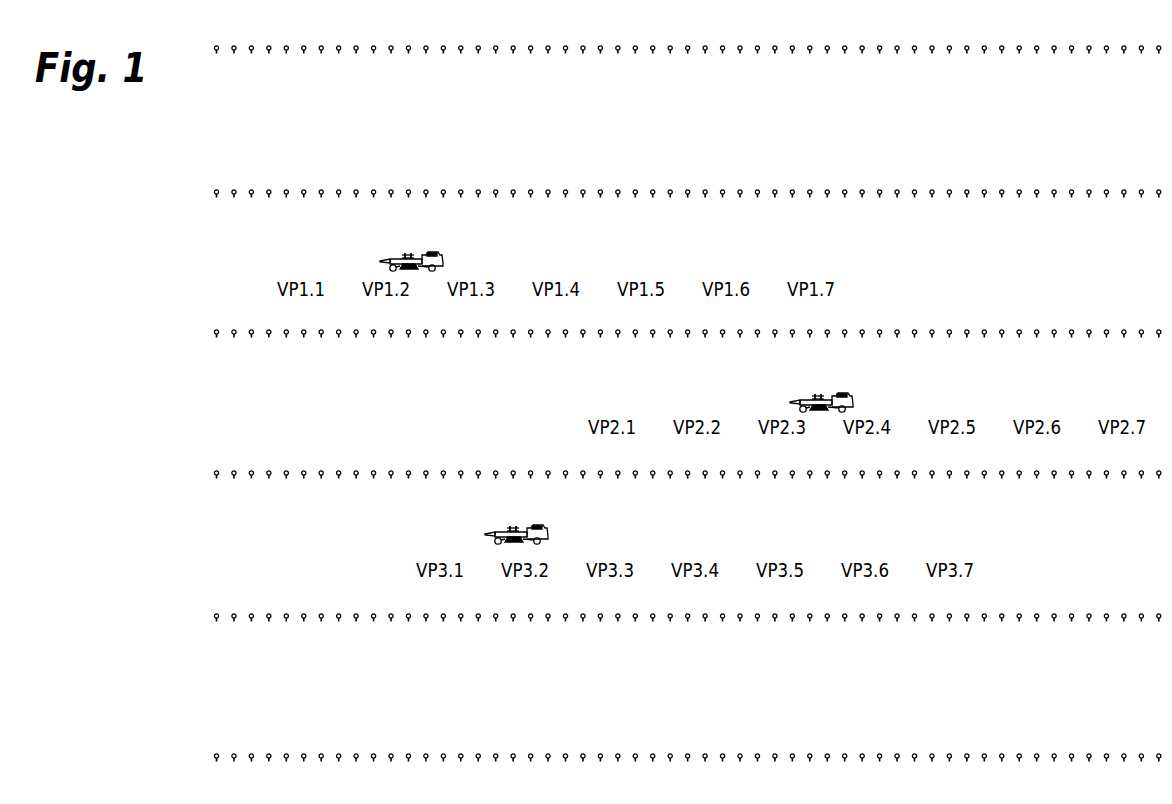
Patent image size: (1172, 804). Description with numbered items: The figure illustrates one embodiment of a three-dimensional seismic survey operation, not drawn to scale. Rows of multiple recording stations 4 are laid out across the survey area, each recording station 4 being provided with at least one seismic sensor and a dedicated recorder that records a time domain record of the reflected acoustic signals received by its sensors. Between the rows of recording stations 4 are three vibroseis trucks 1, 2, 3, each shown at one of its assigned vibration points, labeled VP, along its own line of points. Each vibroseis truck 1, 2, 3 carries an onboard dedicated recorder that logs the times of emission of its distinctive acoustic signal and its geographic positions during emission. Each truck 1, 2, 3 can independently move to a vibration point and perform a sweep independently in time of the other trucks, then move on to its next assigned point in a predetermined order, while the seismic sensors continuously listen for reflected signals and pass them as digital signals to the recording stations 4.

The recording stations 4 is at (687, 65).
The vibroseis truck 1 is at (350, 247).
The vibroseis truck 2 is at (749, 390).
The vibroseis truck 3 is at (445, 523).